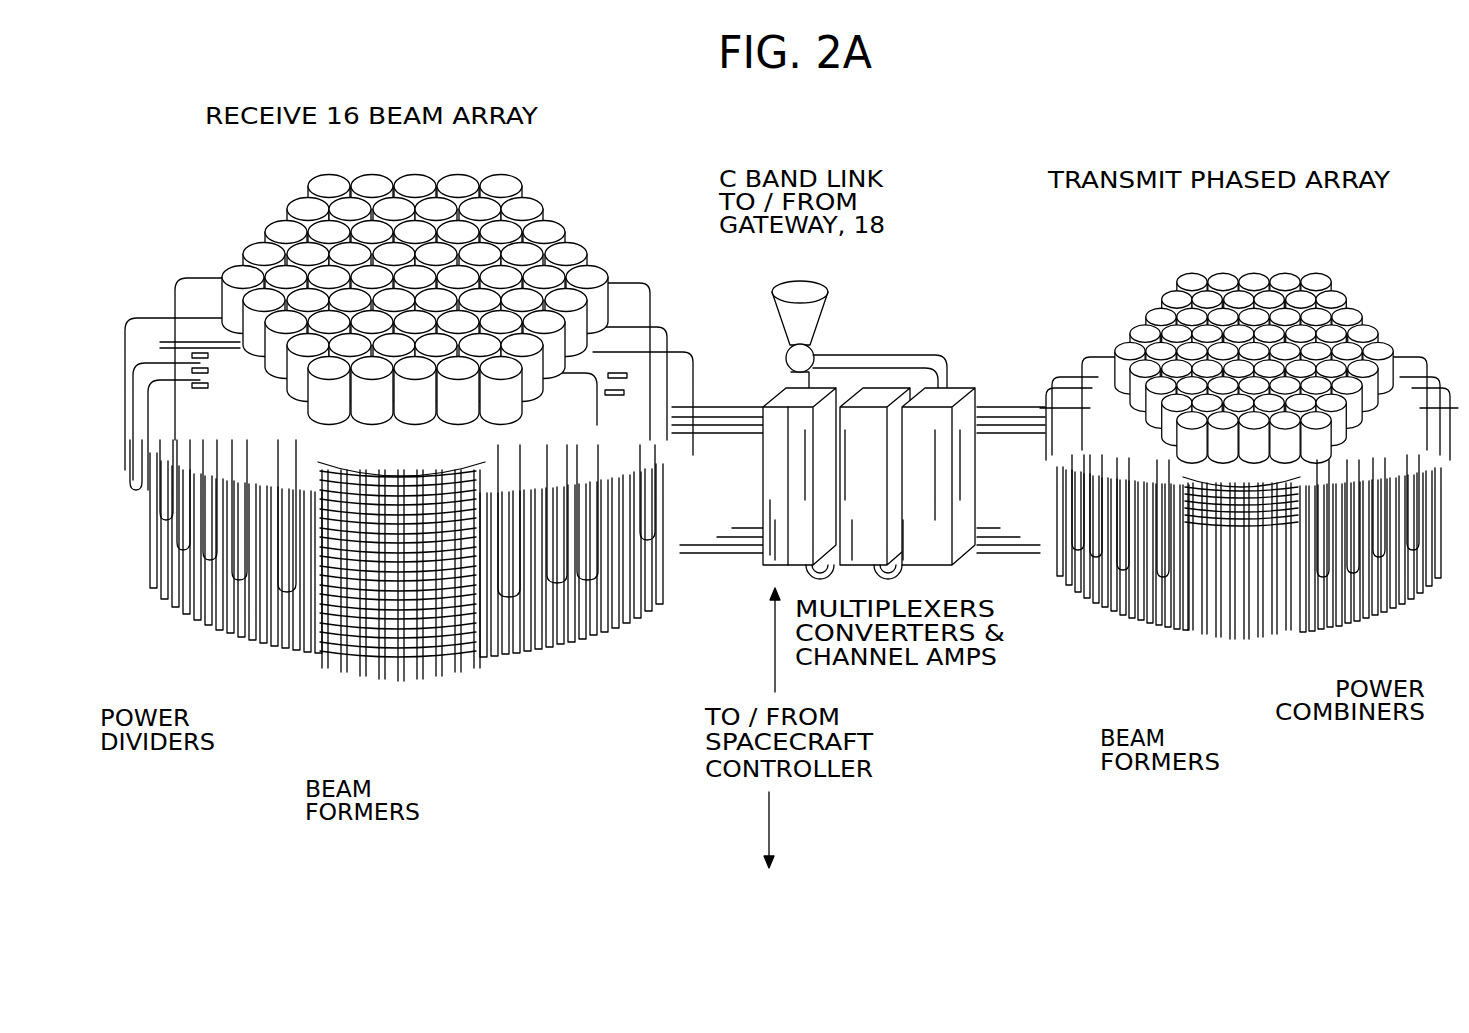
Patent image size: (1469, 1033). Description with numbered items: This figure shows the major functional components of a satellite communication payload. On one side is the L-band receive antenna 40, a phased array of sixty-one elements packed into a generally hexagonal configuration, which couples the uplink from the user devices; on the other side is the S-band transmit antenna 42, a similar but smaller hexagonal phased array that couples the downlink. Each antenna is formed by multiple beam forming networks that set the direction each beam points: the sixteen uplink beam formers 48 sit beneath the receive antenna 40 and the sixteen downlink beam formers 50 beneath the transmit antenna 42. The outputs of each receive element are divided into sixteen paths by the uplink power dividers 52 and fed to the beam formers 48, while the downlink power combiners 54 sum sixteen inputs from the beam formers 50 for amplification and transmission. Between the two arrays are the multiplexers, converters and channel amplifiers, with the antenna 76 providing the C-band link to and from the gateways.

The L-band receive antenna 40 is at (222, 176).
The S-band transmit antenna 42 is at (1365, 271).
The uplink beam formers 48 is at (345, 668).
The downlink beam formers 50 is at (1225, 636).
The uplink power divider 52 is at (217, 635).
The downlink power combiner 54 is at (1438, 585).
The antenna 76 is at (822, 313).